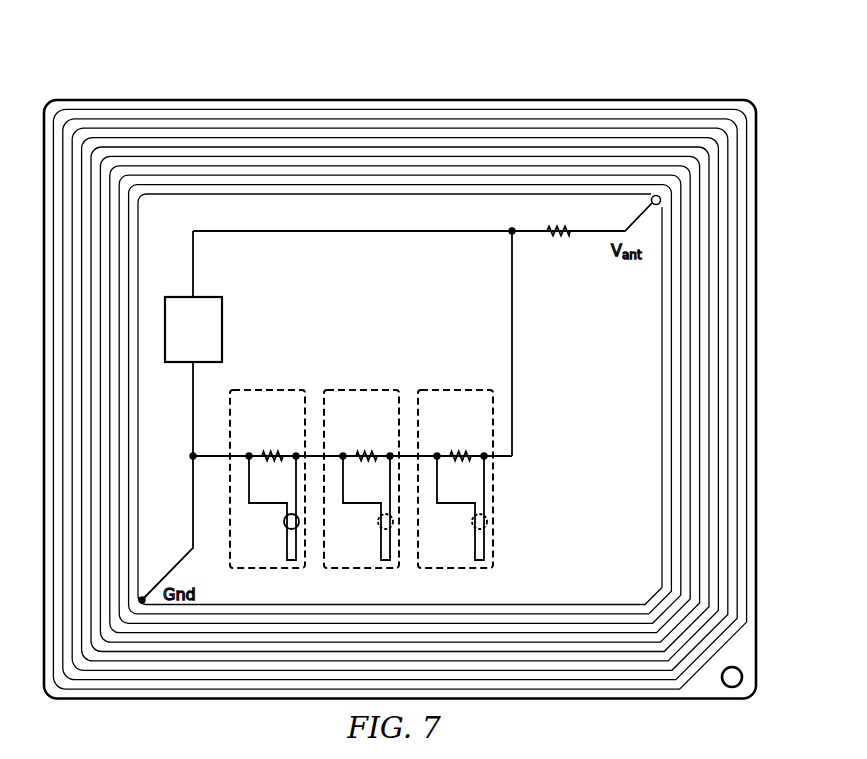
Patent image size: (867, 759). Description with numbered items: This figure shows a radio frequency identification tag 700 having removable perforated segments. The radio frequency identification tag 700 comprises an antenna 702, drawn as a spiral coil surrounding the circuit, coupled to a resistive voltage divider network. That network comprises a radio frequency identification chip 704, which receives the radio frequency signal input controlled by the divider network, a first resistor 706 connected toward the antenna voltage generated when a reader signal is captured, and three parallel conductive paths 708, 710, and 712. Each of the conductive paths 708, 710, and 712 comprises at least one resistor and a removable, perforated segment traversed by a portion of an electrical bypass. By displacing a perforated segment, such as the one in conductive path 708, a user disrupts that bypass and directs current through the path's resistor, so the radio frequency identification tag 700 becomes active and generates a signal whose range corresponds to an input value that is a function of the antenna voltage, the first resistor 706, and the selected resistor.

The radio frequency identification tag 700 is at (400, 357).
The antenna 702 is at (293, 99).
The radio frequency identification chip 704 is at (223, 328).
The resistor R1 706 is at (558, 236).
The conductive path 708 is at (289, 385).
The conductive path 710 is at (363, 385).
The conductive path 712 is at (457, 385).